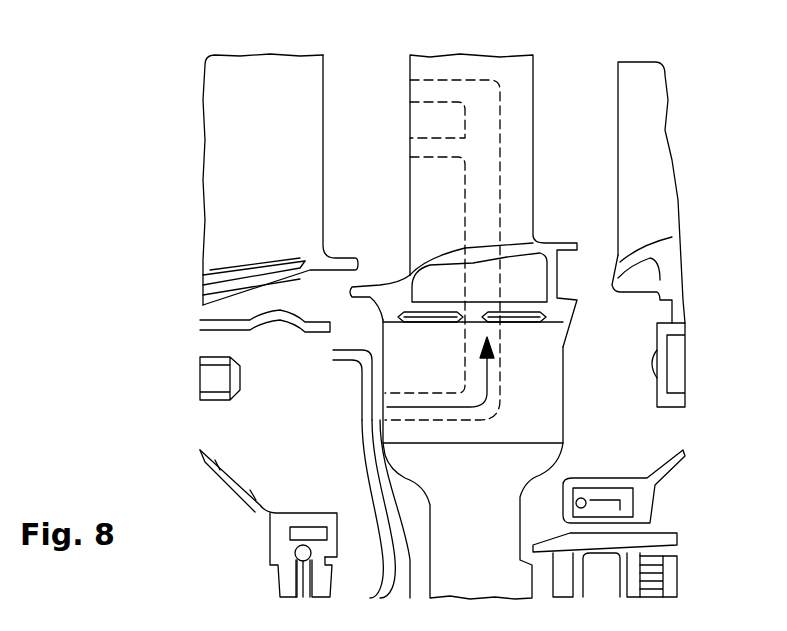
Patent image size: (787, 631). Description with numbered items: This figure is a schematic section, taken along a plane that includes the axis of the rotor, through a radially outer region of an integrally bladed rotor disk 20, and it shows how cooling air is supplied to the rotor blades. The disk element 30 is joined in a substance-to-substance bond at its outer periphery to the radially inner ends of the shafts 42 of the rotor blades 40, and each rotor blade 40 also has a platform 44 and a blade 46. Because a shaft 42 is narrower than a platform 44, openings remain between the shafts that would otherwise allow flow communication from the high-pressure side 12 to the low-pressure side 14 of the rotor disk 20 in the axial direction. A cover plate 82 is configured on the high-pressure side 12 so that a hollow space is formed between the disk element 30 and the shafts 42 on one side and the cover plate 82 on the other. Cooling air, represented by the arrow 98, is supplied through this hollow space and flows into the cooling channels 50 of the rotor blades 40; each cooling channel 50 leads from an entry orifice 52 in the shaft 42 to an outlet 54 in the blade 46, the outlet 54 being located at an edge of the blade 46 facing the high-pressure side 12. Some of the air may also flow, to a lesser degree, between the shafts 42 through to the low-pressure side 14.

The high-pressure side 12 is at (290, 418).
The low-pressure side 14 is at (635, 428).
The integrally bladed rotor disk 20 is at (527, 357).
The disk element 30 is at (480, 577).
The rotor blade 40 is at (520, 105).
The shaft 42 is at (417, 343).
The platform 44 is at (427, 263).
The blade 46 is at (432, 195).
The cooling channel 50 is at (490, 213).
The entry orifice 52 is at (363, 402).
The outlet 54 is at (410, 90).
The cover plate 82 is at (357, 437).
The arrow 98 is at (375, 488).